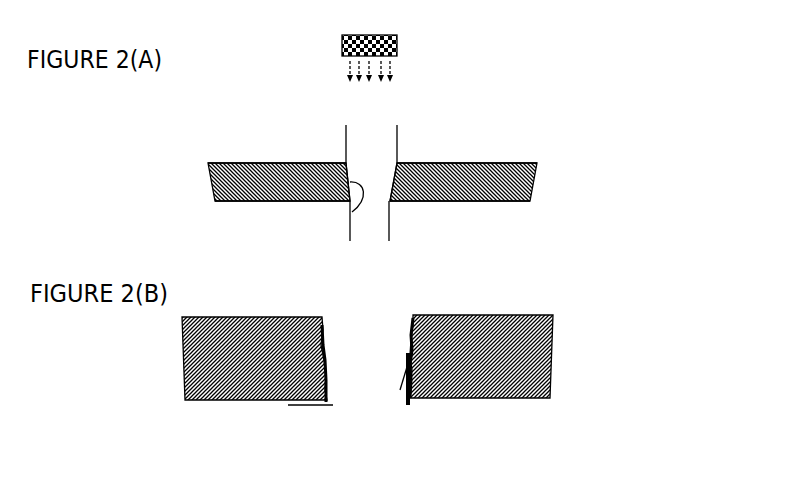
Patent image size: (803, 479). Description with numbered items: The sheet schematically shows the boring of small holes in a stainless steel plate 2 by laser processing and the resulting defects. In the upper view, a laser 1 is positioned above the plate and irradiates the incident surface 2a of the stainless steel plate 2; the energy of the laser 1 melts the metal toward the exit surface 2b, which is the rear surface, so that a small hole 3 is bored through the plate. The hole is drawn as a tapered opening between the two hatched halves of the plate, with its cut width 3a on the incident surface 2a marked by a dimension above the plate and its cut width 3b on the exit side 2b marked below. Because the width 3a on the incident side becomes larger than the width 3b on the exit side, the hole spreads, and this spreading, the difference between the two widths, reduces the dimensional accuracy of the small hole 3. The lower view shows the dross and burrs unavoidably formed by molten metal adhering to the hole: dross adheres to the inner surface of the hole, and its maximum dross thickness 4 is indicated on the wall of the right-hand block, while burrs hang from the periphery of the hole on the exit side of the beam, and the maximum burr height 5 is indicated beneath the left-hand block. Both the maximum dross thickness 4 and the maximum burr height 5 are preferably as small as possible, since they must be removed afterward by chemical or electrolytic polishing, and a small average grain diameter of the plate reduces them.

In FIG. 2A, the laser 1 is at (397, 45).
In FIG. 2A, the stainless steel plate 2 is at (280, 163).
In FIG. 2A, the incident surface of laser beam 2a is at (453, 163).
In FIG. 2A, the exit surface of laser beam 2b is at (447, 201).
In FIG. 2A, the small hole 3 is at (352, 210).
In FIG. 2A, the width of cutting on incident side 3a is at (397, 132).
In FIG. 2A, the width of cutting on exit side 3b is at (389, 231).
In FIG. 2B, the maximum dross thickness 4 is at (419, 379).
In FIG. 2B, the maximum burr height 5 is at (303, 378).